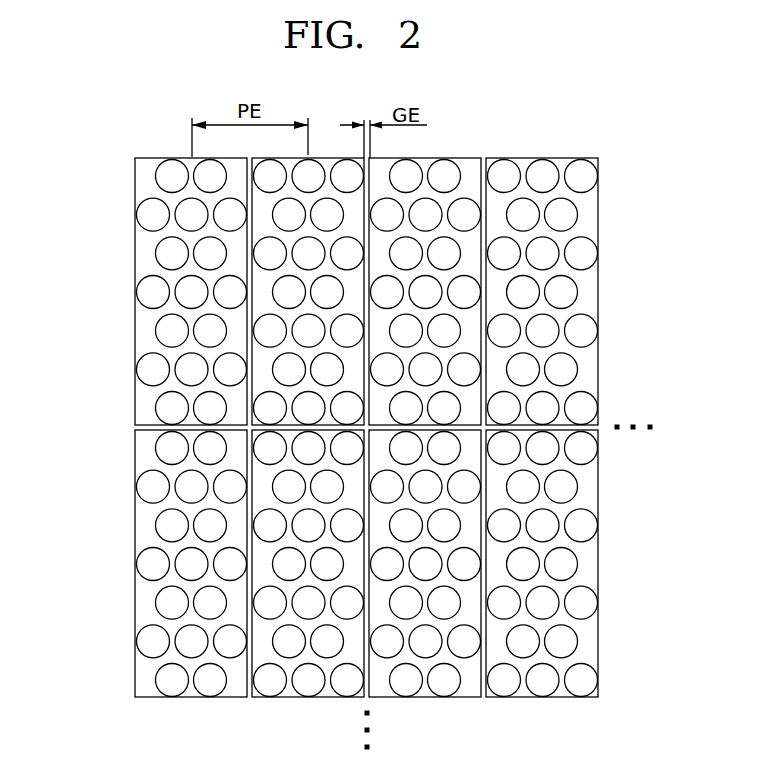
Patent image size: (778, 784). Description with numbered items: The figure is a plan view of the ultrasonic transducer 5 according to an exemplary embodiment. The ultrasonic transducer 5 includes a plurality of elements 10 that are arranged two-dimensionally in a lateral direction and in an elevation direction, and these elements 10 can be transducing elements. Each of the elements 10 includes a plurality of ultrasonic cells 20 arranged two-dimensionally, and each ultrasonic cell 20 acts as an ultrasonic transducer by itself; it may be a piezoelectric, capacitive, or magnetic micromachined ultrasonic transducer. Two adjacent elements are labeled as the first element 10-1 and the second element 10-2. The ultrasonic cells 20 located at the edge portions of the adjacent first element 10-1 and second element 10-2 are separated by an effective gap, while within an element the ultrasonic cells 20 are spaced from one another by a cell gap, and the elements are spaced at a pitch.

The ultrasonic transducer 5 is at (63, 158).
The element 10 is at (135, 245).
The first element 10-1 is at (150, 158).
The second element 10-2 is at (290, 158).
The ultrasonic cell 20 is at (140, 294).